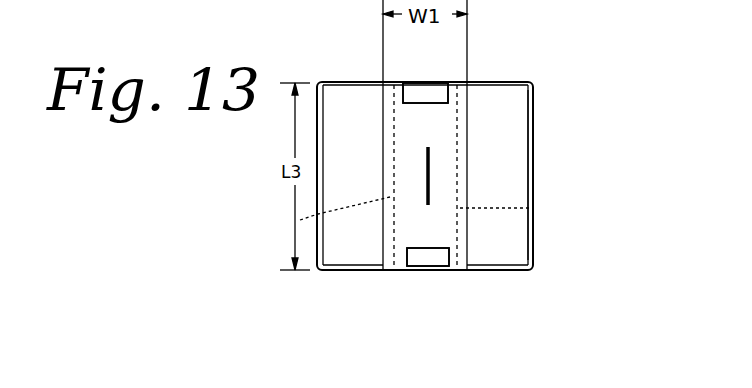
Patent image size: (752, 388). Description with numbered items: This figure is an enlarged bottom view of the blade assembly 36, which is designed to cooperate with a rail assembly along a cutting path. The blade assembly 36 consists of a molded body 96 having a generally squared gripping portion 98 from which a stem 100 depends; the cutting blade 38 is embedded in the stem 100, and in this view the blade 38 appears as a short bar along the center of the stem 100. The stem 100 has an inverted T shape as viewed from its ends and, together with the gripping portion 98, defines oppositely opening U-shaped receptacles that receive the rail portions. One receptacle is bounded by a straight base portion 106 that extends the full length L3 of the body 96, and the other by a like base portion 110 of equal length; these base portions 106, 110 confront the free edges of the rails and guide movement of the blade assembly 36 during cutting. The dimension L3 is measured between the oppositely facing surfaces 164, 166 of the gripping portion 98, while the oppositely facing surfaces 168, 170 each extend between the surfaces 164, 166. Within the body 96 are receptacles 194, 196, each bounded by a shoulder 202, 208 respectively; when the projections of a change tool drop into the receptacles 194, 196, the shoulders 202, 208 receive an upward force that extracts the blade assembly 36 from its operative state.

The blade assembly 36 is at (517, 164).
The cutting blade 38 is at (428, 180).
The molded body 96 is at (515, 127).
The gripping portion 98 is at (535, 240).
The stem 100 is at (430, 125).
The base portion 106 is at (535, 208).
The base portion 110 is at (293, 226).
The surface of gripping portion 164 is at (362, 82).
The surface of gripping portion 166 is at (377, 270).
The surface of body 168 is at (318, 228).
The surface of body 170 is at (533, 137).
The receptacle 194 is at (436, 251).
The receptacle 196 is at (435, 101).
The shoulder 202 is at (419, 263).
The shoulder 208 is at (422, 97).